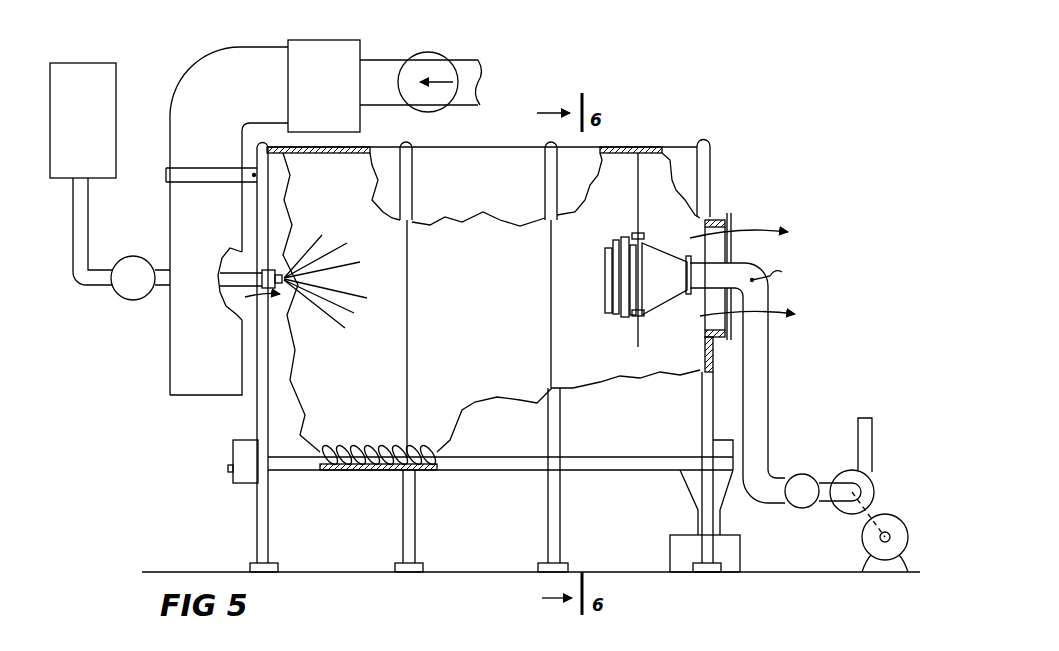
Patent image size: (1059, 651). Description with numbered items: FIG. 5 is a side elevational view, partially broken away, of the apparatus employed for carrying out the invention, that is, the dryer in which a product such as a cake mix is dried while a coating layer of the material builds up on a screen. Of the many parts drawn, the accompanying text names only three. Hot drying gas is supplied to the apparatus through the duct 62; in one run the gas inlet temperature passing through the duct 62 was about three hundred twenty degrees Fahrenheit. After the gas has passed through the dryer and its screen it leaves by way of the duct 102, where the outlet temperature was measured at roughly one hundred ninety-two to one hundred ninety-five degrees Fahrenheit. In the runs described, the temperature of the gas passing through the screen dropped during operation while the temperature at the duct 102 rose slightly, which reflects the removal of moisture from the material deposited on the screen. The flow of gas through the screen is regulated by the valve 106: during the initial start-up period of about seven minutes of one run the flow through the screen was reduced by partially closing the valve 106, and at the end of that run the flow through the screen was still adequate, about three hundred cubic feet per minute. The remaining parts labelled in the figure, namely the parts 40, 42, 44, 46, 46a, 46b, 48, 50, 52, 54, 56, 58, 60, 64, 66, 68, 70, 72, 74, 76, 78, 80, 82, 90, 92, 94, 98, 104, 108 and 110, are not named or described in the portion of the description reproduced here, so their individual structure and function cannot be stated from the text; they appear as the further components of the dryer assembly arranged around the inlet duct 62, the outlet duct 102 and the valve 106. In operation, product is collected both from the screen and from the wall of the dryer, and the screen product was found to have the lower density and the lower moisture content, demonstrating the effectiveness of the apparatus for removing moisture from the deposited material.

The spray coating apparatus 40 is at (696, 142).
The end wall 42 is at (703, 368).
The front support post 44 is at (276, 326).
The housing wall 46 is at (357, 150).
The housing lower section 46a is at (398, 421).
The housing upper section 46b is at (506, 373).
The frame shelf 48 is at (528, 466).
The roller conveyor 50 is at (367, 475).
The control box 52 is at (240, 482).
The hopper 54 is at (680, 483).
The discharge chute 56 is at (740, 522).
The base block 58 is at (680, 556).
The support feet 60 is at (706, 556).
The duct 62 is at (248, 260).
The air duct 64 is at (172, 368).
The filter unit 66 is at (348, 28).
The blower 68 is at (448, 58).
The spray nozzle 70 is at (287, 268).
The liquid line 72 is at (85, 210).
The pump 74 is at (155, 245).
The liquid reservoir 76 is at (116, 160).
The spray pattern 78 is at (350, 278).
The disc stack 80 is at (600, 283).
The cone member 82 is at (655, 298).
The first disc 90 is at (620, 318).
The second disc 92 is at (605, 300).
The mounting plate 94 is at (630, 262).
The support rod 98 is at (645, 205).
The duct 102 is at (720, 214).
The exhaust pipe 104 is at (770, 385).
The valve 106 is at (812, 505).
The blower housing 108 is at (868, 470).
The motor 110 is at (892, 556).